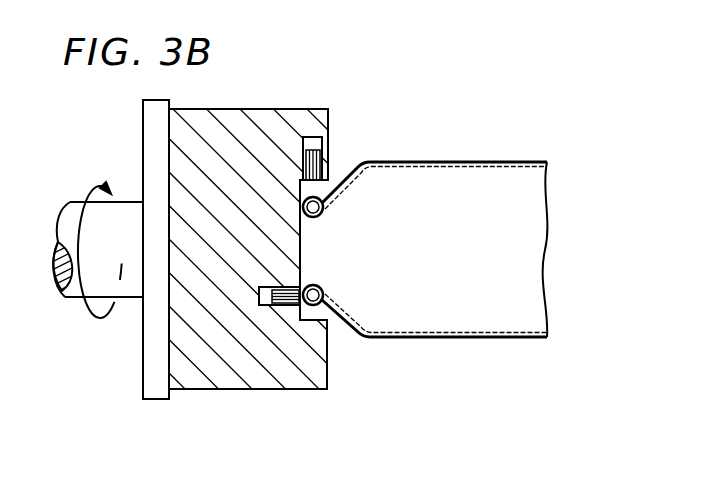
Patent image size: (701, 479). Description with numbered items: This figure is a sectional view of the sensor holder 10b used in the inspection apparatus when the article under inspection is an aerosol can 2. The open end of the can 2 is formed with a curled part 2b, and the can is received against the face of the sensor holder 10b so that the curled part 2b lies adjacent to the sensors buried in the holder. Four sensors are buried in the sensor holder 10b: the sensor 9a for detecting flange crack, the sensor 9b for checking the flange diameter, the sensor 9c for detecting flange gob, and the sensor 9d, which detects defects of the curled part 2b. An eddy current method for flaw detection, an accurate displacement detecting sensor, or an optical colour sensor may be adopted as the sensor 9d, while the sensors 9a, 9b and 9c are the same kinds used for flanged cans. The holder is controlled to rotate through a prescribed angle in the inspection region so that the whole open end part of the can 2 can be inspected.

The can 2 is at (425, 189).
The curled part 2b is at (322, 214).
The sensor 9a is at (344, 372).
The sensor 9b is at (344, 372).
The sensor 9c is at (267, 305).
The sensor 9d is at (320, 153).
The sensor holder 10b is at (293, 110).